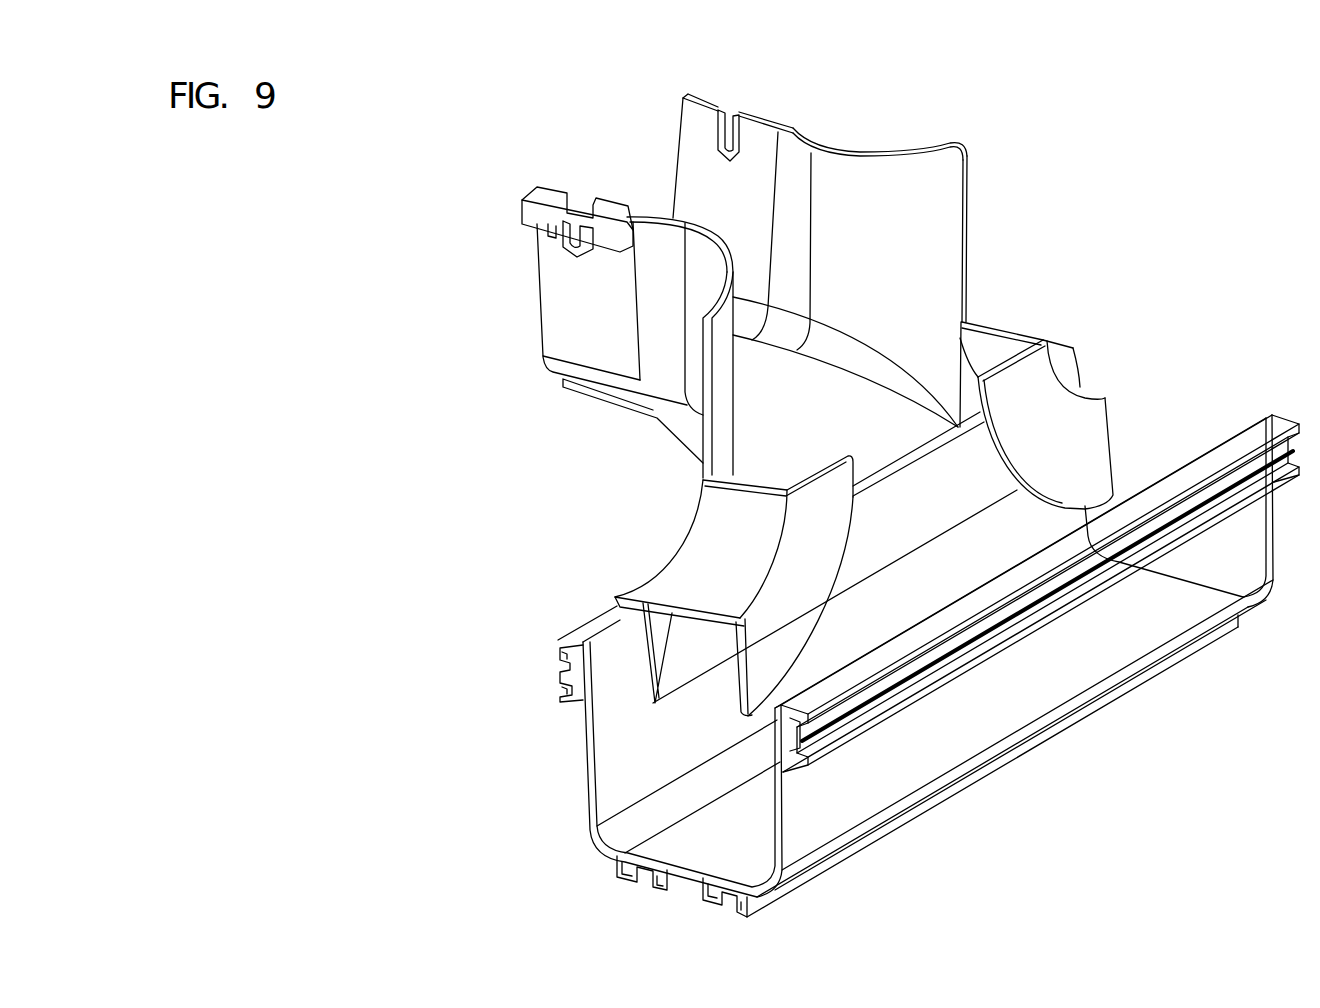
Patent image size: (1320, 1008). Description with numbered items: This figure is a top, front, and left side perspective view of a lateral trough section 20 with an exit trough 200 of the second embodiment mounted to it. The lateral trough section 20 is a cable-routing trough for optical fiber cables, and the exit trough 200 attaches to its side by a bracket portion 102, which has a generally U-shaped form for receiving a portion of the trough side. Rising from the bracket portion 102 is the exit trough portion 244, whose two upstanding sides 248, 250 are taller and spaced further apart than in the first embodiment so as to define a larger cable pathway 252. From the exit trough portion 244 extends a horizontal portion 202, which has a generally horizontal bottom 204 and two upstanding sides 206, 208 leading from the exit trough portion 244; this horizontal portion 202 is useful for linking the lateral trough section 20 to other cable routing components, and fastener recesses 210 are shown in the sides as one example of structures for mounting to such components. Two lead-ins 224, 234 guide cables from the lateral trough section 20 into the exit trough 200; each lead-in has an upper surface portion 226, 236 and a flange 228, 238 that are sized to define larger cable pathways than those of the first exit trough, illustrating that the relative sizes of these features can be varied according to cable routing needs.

The lateral trough section 20 is at (973, 780).
The bracket portion 102 is at (928, 664).
The exit trough 200 is at (757, 265).
The horizontal portion 202 is at (800, 133).
The bottom 204 is at (750, 363).
The upstanding side 206 is at (537, 278).
The upstanding side 208 is at (678, 143).
The fastener recess 210 is at (728, 160).
The lead-in 224 is at (694, 651).
The upper surface portion 226 is at (708, 563).
The flange 228 is at (765, 678).
The lead-in 234 is at (1093, 383).
The upper surface portion 236 is at (1087, 398).
The flange 238 is at (1082, 460).
The exit trough portion 244 is at (965, 222).
The upstanding side 248 is at (705, 313).
The upstanding side 250 is at (880, 154).
The cable pathway 252 is at (908, 445).